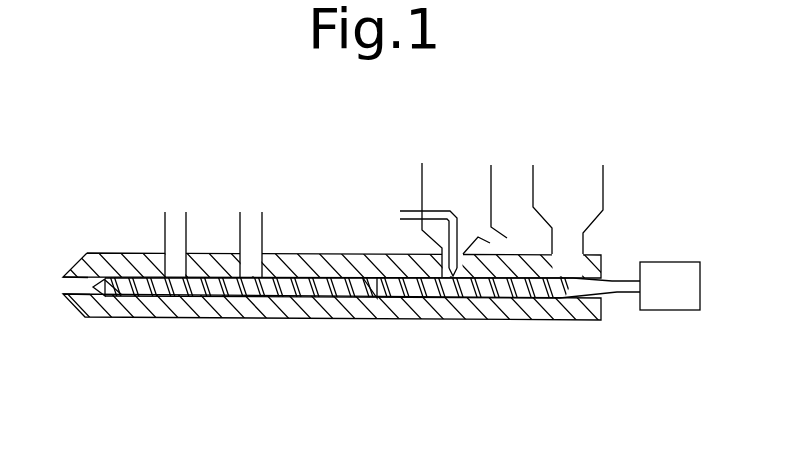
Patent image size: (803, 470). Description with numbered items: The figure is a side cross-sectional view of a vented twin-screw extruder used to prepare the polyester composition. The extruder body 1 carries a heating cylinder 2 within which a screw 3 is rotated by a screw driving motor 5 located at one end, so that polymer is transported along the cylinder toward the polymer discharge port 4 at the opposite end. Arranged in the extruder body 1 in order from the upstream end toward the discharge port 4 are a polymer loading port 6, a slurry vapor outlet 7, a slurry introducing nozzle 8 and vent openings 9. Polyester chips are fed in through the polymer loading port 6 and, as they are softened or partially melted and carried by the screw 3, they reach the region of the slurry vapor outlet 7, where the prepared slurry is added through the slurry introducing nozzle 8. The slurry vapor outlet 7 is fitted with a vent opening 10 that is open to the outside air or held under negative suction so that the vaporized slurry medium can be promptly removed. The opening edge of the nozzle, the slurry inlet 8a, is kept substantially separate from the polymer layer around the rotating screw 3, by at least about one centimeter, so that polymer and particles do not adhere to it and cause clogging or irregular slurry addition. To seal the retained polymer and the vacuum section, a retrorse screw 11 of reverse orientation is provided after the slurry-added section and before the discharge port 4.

The extruder body 1 is at (326, 330).
The heating cylinder 2 is at (320, 312).
The screw 3 is at (133, 295).
The polymer discharge port 4 is at (68, 286).
The screw driving motor 5 is at (667, 288).
The polymer loading port 6 is at (577, 200).
The slurry vapor outlet 7 is at (457, 175).
The slurry introducing nozzle 8 is at (395, 212).
The slurry inlet 8a is at (451, 302).
The vent openings 9 is at (248, 213).
The vent opening 10 is at (507, 248).
The retrorse screw 11 is at (118, 287).